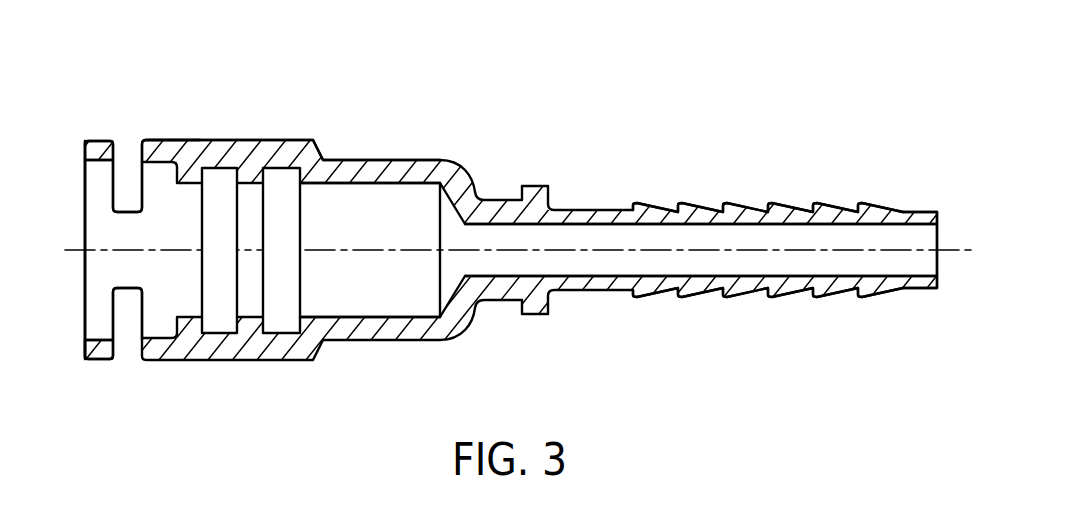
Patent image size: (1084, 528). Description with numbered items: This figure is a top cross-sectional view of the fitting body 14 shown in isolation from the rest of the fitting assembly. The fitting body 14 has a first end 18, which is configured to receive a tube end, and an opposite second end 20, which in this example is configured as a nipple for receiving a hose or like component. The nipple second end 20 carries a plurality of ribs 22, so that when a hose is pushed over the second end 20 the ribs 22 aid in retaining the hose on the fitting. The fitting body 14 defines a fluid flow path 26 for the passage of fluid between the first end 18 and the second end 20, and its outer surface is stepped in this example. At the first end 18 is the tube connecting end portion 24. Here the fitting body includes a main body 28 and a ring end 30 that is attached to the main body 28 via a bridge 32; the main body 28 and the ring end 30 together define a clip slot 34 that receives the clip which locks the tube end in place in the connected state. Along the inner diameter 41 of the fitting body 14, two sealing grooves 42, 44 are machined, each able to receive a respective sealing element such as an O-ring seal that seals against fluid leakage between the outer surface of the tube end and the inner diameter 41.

The fitting body 14 is at (532, 120).
The first end 18 is at (101, 145).
The second end 20 is at (938, 219).
The ribs 22 is at (813, 296).
The tube connecting end portion 24 is at (180, 108).
The fluid flow path 26 is at (413, 229).
The main body 28 is at (270, 140).
The ring end 30 is at (100, 360).
The bridge 32 is at (137, 232).
The clip slot 34 is at (127, 343).
The inner diameter 41 is at (370, 176).
The sealing groove 42 is at (218, 318).
The sealing groove 44 is at (280, 316).